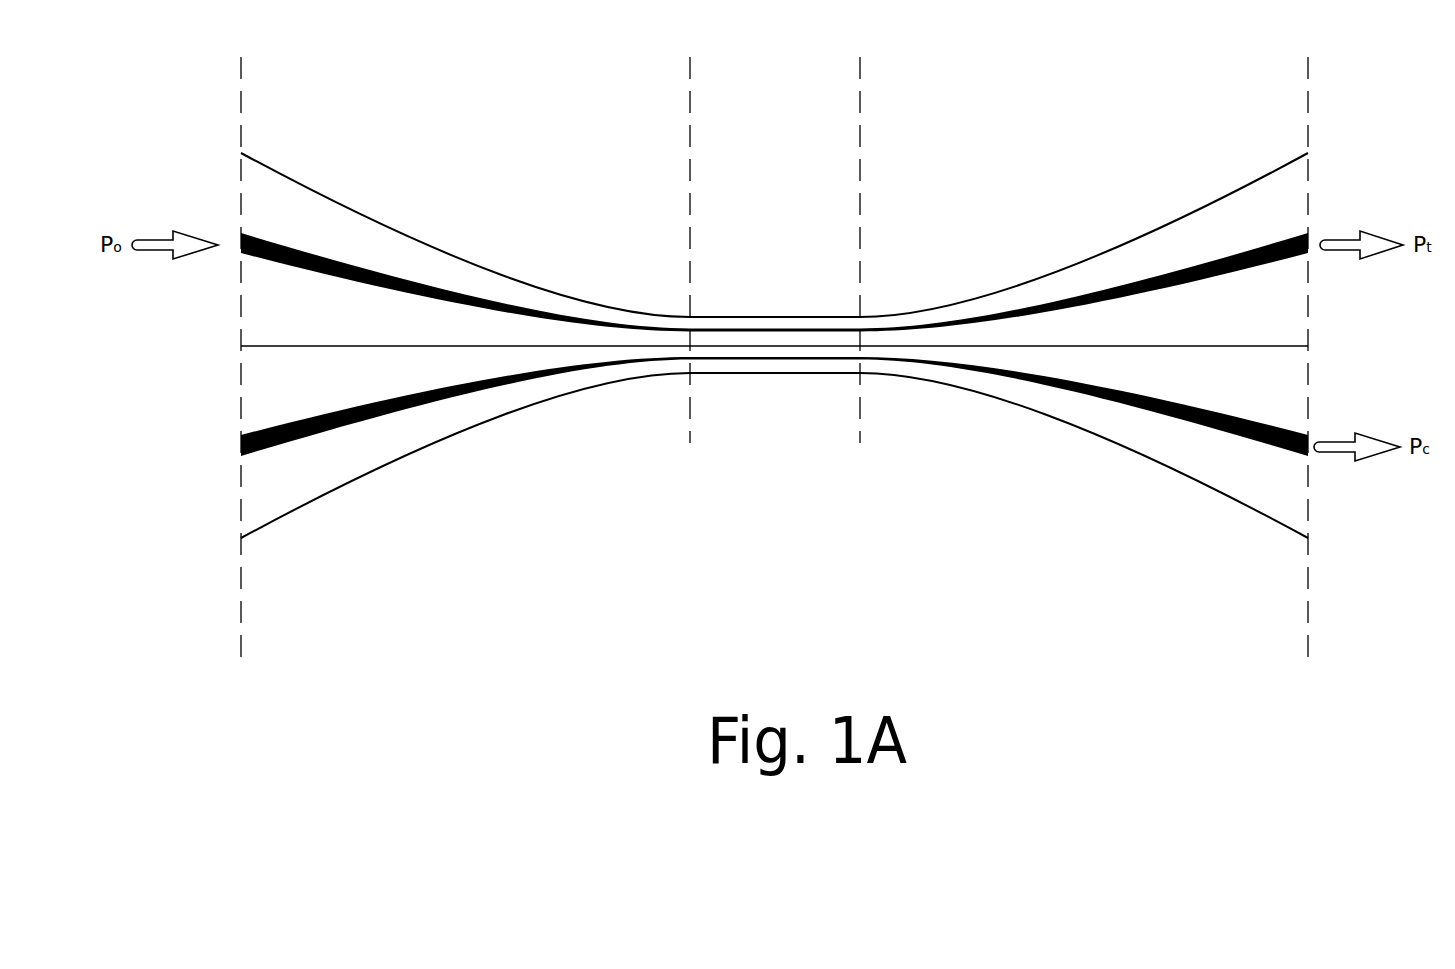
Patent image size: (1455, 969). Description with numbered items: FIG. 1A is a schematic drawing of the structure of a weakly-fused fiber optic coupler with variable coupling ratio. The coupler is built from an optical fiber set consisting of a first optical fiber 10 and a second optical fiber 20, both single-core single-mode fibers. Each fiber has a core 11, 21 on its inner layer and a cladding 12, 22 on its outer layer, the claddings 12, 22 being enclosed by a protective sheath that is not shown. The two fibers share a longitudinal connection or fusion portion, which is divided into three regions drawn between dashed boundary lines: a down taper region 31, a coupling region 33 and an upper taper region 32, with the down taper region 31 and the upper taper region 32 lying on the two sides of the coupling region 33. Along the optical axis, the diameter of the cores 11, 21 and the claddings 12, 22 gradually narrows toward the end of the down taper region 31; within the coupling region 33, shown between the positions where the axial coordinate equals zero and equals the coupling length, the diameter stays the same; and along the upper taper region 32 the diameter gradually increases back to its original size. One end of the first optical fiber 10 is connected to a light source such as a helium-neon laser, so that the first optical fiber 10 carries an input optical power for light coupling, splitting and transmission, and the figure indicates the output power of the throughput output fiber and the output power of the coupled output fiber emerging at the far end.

The first optical fiber 10 is at (725, 194).
The core 11 is at (241, 243).
The cladding 12 is at (312, 225).
The second optical fiber 20 is at (726, 477).
The core 21 is at (223, 472).
The cladding 22 is at (300, 465).
The down taper region 31 is at (490, 192).
The upper taper region 32 is at (1035, 222).
The coupling region 33 is at (765, 265).